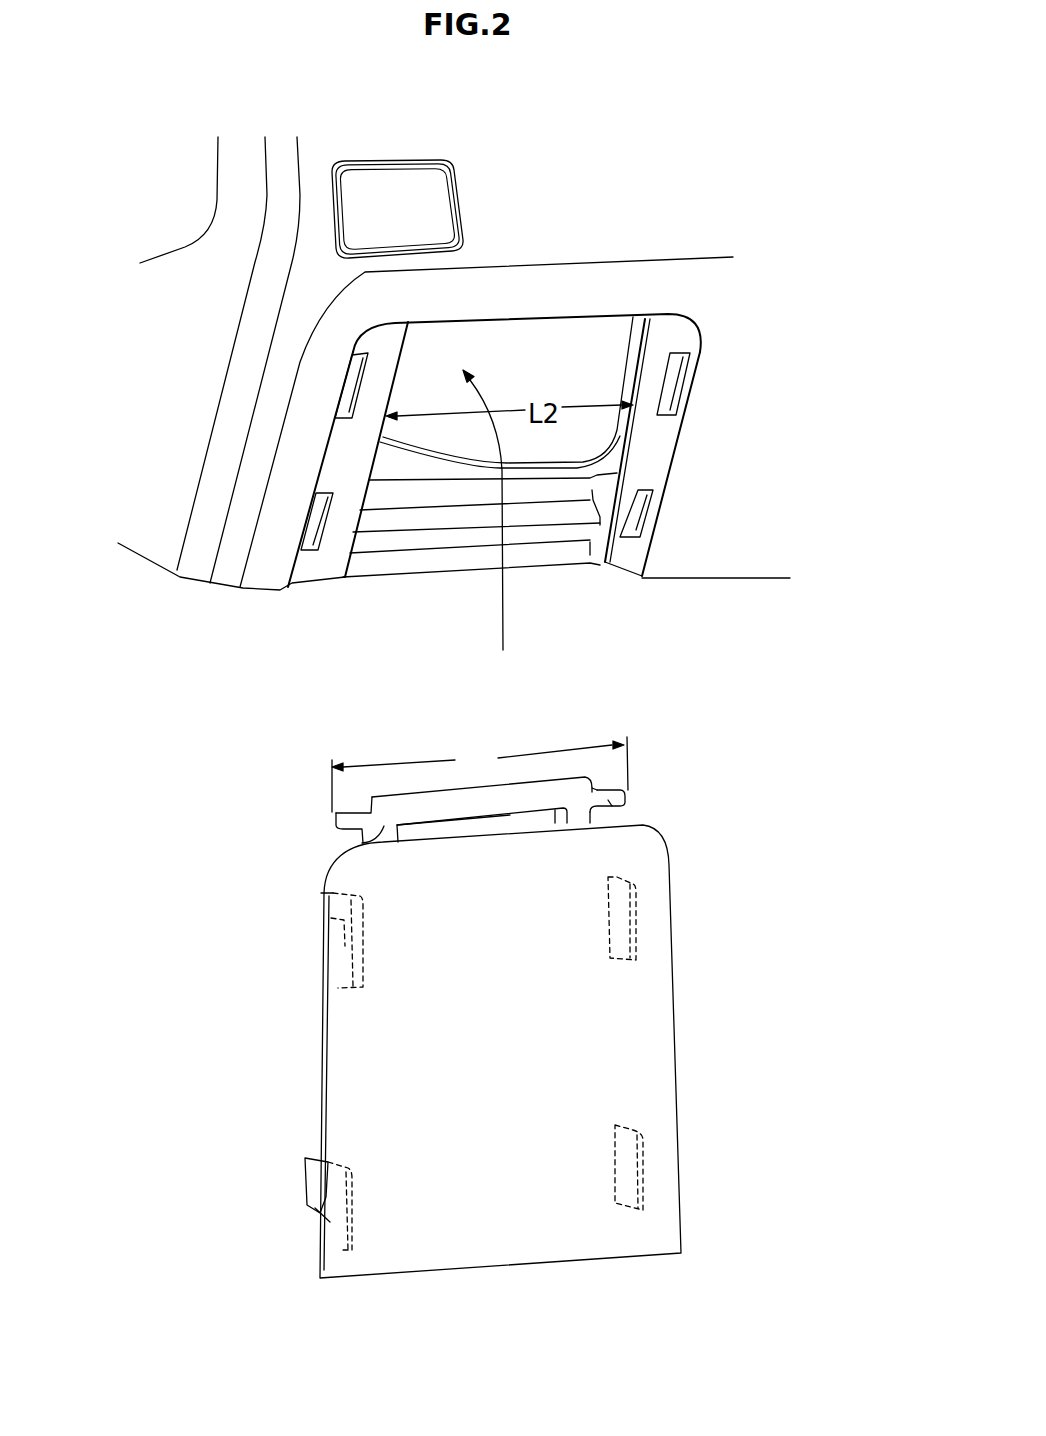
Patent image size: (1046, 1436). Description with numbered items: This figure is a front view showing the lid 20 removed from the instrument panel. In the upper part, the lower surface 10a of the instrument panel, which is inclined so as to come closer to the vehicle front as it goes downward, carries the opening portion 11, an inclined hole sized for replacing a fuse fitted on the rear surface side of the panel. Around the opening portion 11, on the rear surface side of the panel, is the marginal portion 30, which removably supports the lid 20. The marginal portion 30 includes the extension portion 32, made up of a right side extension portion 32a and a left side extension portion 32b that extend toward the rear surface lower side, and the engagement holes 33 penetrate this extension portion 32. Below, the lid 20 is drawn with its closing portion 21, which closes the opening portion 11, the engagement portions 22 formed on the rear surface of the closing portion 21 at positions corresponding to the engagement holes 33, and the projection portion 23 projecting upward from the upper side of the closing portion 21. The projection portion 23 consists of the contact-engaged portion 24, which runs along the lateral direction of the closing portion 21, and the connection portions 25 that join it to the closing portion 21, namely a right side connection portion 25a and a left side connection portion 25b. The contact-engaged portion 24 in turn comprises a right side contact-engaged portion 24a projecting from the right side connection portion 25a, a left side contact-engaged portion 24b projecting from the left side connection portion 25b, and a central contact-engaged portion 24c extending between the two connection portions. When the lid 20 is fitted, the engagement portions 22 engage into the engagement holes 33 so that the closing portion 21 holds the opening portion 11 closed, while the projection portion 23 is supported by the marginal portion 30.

The lower surface 10a is at (733, 562).
The opening portion 11 is at (553, 363).
The lid 20 is at (491, 975).
The closing portion 21 is at (628, 1000).
The engagement portions 22 is at (322, 893).
The projection portion 23 is at (553, 777).
The contact-engaged portion 24 is at (475, 777).
The right side contact-engaged portion 24a is at (622, 808).
The left side contact-engaged portion 24b is at (348, 815).
The central contact-engaged portion 24c is at (510, 818).
The connection portions 25 is at (475, 812).
The right side connection portion 25a is at (630, 822).
The left side connection portion 25b is at (362, 842).
The marginal portion 30 is at (667, 337).
The extension portion 32 is at (451, 450).
The right side extension portion 32a is at (652, 443).
The left side extension portion 32b is at (343, 447).
The engagement holes 33 is at (352, 380).